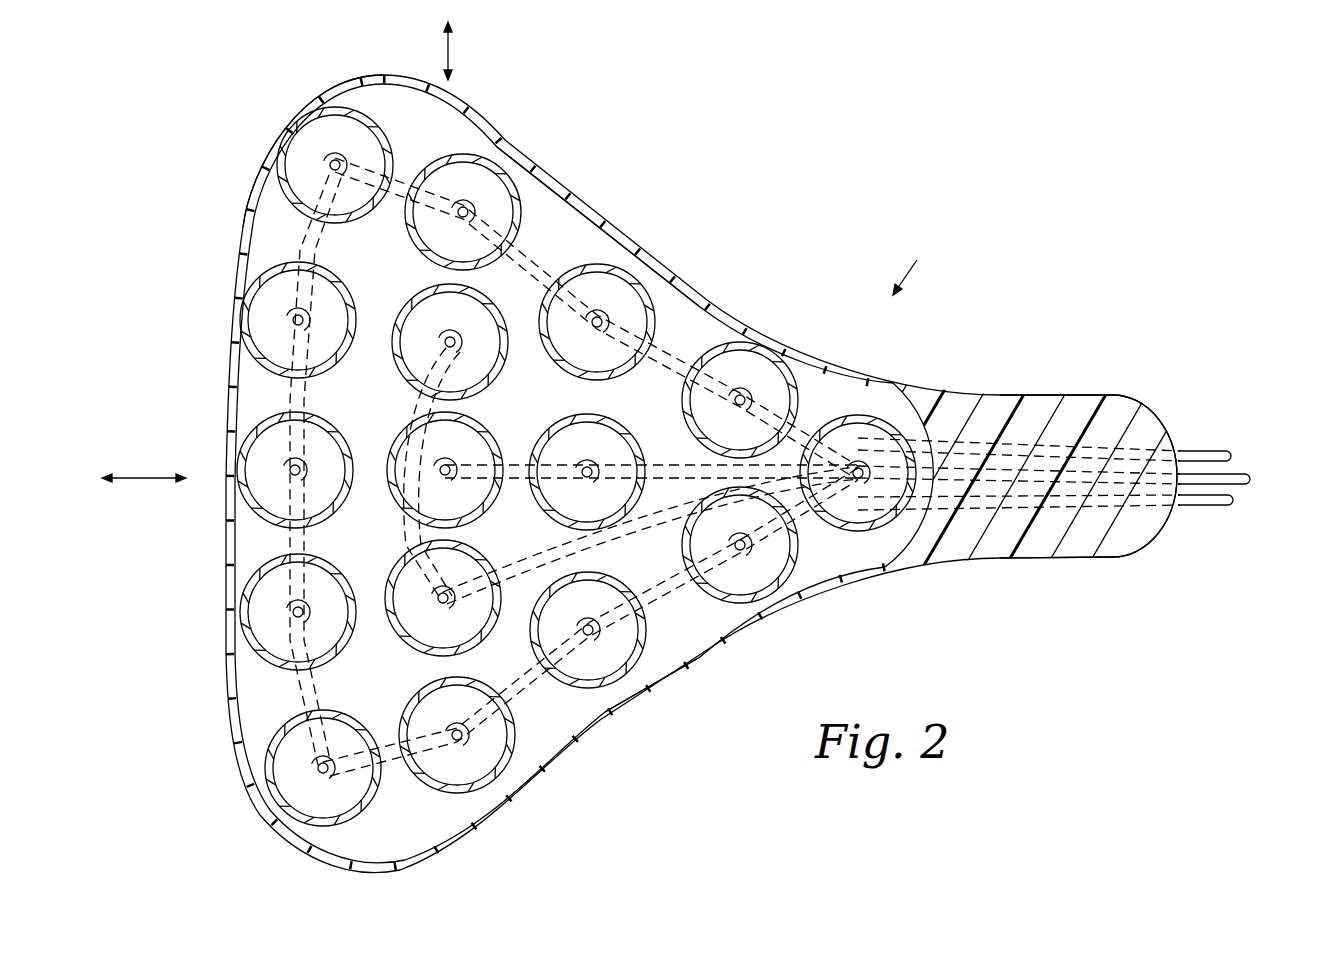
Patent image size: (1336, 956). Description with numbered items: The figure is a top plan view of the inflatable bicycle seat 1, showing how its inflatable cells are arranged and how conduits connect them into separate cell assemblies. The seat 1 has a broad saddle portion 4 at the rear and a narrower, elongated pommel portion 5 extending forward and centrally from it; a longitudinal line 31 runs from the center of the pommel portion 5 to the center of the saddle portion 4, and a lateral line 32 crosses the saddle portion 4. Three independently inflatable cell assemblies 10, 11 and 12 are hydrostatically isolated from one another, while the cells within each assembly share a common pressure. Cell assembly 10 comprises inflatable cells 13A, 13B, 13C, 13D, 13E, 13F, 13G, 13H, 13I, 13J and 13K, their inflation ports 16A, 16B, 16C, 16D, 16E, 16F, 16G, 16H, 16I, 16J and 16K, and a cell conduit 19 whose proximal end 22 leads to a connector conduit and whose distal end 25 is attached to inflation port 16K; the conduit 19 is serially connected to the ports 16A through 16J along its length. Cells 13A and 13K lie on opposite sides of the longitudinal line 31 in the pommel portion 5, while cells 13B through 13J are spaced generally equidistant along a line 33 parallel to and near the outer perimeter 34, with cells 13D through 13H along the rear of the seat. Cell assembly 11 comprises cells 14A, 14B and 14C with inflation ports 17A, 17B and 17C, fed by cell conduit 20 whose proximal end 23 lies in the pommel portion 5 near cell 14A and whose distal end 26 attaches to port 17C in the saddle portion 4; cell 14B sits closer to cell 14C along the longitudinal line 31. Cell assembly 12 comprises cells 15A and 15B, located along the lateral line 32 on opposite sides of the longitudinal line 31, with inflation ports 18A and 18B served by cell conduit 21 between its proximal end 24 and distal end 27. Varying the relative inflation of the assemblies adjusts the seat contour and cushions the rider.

The inflatable bicycle seat 1 is at (914, 268).
The saddle portion 4 is at (557, 486).
The pommel portion 5 is at (1081, 492).
The cell assembly 10 is at (672, 320).
The cell assembly 11 is at (895, 417).
The cell assembly 12 is at (540, 243).
The distal end of cell conduit 19 25 is at (716, 630).
The distal end of cell conduit 20 26 is at (406, 473).
The distal end of cell conduit 21 27 is at (450, 333).
The longitudinal line 31 is at (144, 465).
The lateral line 32 is at (461, 51).
The line 33 is at (302, 247).
The outer perimeter 34 is at (288, 115).
The cell conduit 19 is at (1190, 457).
The cell conduit 20 is at (1237, 477).
The cell conduit 21 is at (1212, 502).
The proximal end of cell conduit 19 22 is at (1242, 457).
The proximal end of cell conduit 20 23 is at (1263, 481).
The proximal end of cell conduit 21 24 is at (1246, 503).
The inflatable cell 13A is at (740, 400).
The inflatable cell 13B is at (597, 322).
The inflatable cell 13C is at (463, 212).
The inflatable cell 13D is at (335, 165).
The inflatable cell 13E is at (298, 320).
The inflatable cell 13F is at (295, 470).
The inflatable cell 13G is at (298, 612).
The inflatable cell 13H is at (323, 768).
The inflatable cell 13I is at (457, 735).
The inflatable cell 13J is at (588, 630).
The inflatable cell 13K is at (740, 545).
The inflation port 16A is at (737, 414).
The inflation port 16B is at (589, 335).
The inflation port 16C is at (455, 226).
The inflation port 16D is at (348, 177).
The inflation port 16E is at (316, 320).
The inflation port 16F is at (314, 469).
The inflation port 16G is at (317, 611).
The inflation port 16H is at (321, 781).
The inflation port 16I is at (455, 749).
The inflation port 16J is at (595, 644).
The inflation port 16K is at (746, 559).
The inflatable cell 14A is at (858, 473).
The inflatable cell 14B is at (587, 472).
The inflatable cell 14C is at (445, 470).
The inflation port 17A is at (870, 470).
The inflation port 17B is at (602, 464).
The inflation port 17C is at (435, 459).
The inflation port 18A is at (443, 598).
The inflation port 18B is at (433, 350).
The inflatable cell 15A is at (443, 614).
The inflatable cell 15B is at (457, 362).